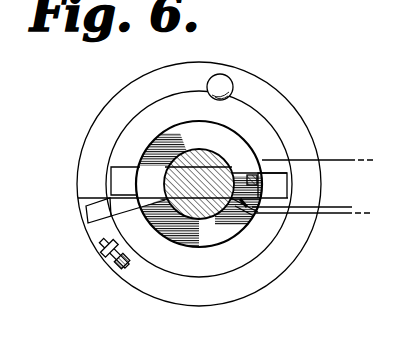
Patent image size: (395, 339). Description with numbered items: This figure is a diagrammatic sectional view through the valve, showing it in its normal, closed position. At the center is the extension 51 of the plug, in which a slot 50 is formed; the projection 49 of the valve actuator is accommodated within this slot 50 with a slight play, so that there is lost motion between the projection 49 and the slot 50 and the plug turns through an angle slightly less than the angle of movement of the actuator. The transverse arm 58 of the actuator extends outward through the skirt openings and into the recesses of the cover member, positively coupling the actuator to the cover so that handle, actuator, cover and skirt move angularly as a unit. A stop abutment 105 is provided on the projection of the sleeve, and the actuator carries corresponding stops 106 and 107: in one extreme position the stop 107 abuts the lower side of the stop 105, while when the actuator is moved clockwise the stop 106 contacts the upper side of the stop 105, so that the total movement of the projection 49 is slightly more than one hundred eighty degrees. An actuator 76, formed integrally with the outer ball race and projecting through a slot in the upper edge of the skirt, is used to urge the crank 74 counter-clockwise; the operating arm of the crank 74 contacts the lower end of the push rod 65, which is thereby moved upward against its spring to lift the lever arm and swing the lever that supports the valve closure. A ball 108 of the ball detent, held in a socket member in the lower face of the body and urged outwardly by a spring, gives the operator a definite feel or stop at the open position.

The ball 108 is at (222, 78).
The extension 51 is at (205, 167).
The slot 50 is at (207, 166).
The projection 49 is at (220, 176).
The stop abutment 105 is at (262, 160).
The stop 106 is at (142, 188).
The transverse arm 58 is at (282, 183).
The actuator 76 is at (85, 212).
The stop 107 is at (259, 212).
The crank 74 is at (99, 251).
The push rod 65 is at (117, 263).